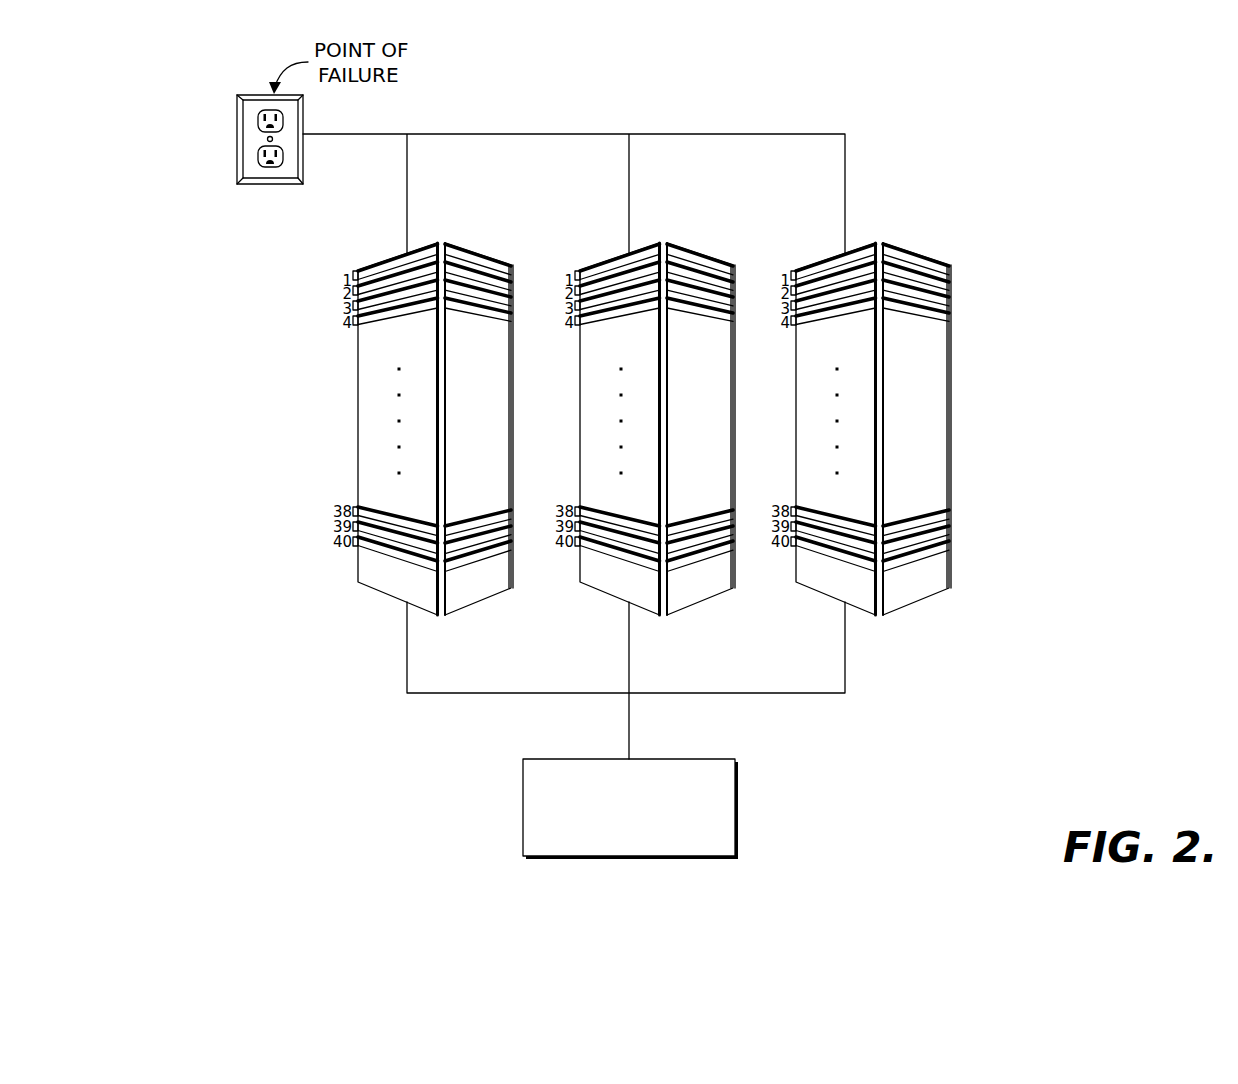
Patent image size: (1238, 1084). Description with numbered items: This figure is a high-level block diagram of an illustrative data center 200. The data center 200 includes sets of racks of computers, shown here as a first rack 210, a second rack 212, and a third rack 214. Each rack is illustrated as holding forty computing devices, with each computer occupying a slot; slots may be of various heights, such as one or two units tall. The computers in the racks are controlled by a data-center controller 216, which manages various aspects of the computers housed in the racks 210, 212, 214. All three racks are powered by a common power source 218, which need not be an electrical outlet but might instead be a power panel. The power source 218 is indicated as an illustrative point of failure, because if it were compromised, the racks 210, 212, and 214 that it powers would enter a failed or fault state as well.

The data center 200 is at (1027, 746).
The first rack 210 is at (481, 601).
The second rack 212 is at (654, 434).
The third rack 214 is at (870, 434).
The data-center controller 216 is at (680, 857).
The power source 218 is at (288, 187).